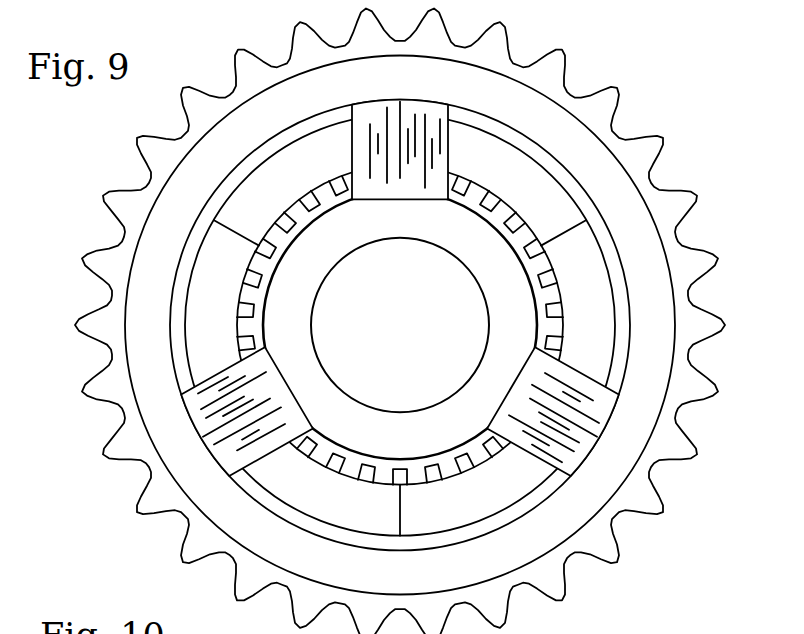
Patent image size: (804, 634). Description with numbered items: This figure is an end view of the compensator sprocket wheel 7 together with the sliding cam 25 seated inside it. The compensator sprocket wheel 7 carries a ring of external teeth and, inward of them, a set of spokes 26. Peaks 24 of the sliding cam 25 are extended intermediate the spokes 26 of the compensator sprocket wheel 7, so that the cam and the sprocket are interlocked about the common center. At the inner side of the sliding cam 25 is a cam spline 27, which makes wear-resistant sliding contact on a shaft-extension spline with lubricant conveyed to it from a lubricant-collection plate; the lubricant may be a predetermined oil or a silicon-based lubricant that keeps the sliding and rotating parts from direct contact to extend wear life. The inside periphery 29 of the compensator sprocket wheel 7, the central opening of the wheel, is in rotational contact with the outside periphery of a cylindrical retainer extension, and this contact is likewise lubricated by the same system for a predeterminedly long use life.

The compensator sprocket wheel 7 is at (553, 105).
The peaks 24 is at (620, 246).
The sliding cam 25 is at (588, 286).
The spokes 26 is at (415, 130).
The cam spline 27 is at (567, 311).
The inside periphery 29 is at (402, 236).